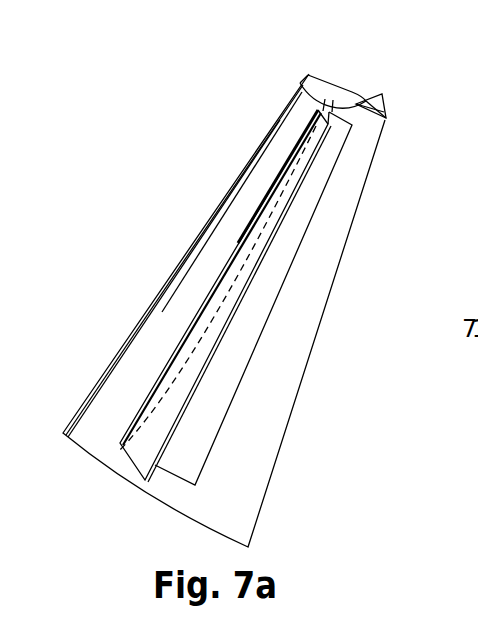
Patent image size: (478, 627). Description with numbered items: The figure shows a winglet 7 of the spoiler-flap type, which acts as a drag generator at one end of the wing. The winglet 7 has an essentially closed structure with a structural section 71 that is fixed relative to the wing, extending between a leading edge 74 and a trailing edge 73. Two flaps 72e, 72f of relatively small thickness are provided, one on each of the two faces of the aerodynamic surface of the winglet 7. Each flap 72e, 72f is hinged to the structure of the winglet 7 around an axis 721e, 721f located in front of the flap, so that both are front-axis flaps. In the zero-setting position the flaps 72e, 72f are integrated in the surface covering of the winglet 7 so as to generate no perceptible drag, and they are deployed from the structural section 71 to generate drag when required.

The winglet 7 is at (197, 177).
The structural section 71 is at (123, 385).
The trailing edge 73 is at (343, 255).
The leading edge 74 is at (276, 117).
The flap 72f is at (140, 458).
The axis 721f is at (305, 90).
The flap 72e is at (386, 118).
The axis 721e is at (357, 100).